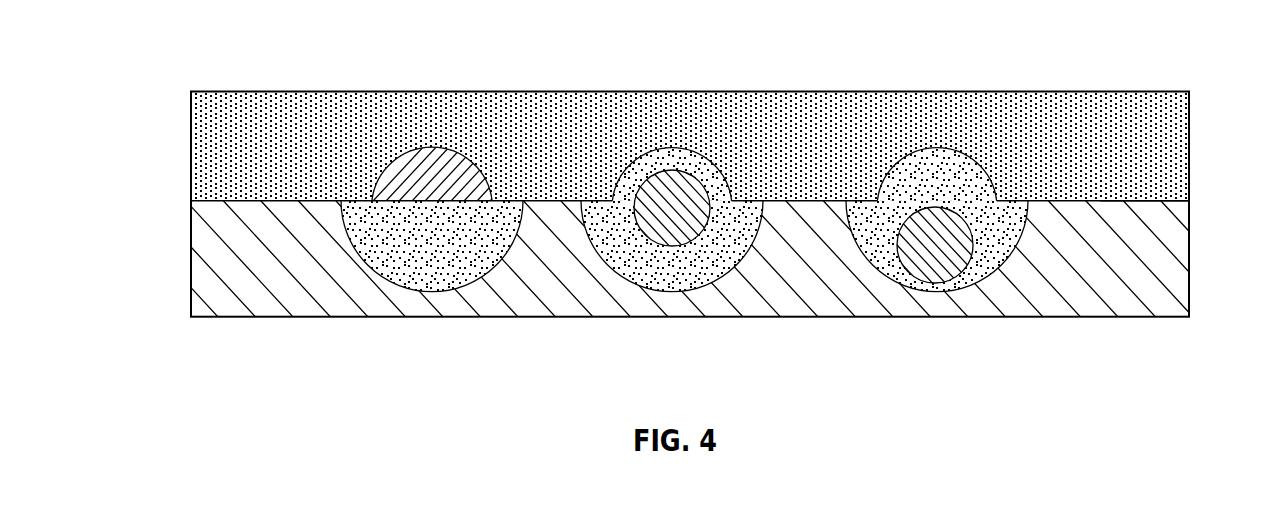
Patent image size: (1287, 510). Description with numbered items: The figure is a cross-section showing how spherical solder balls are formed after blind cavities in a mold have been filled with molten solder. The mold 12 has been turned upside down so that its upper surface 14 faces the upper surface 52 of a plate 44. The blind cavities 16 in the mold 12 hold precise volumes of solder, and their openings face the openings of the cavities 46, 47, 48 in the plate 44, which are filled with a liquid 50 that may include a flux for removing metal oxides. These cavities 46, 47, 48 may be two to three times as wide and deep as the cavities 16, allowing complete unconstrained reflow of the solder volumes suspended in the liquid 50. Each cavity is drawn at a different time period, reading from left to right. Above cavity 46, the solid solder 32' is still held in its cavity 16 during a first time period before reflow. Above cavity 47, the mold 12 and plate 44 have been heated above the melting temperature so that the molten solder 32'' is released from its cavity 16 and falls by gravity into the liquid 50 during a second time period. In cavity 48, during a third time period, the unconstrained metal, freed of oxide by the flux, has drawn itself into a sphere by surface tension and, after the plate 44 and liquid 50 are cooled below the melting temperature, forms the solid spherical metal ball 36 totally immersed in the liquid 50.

The mold 12 is at (191, 143).
The upper surface 14 is at (225, 201).
The plate 44 is at (191, 283).
The cavity 46 is at (377, 268).
The cavity 47 is at (612, 270).
The cavity 48 is at (868, 266).
The liquid 50 is at (433, 274).
The blind cavities 16 is at (484, 176).
The solid solder 32' is at (465, 123).
The molten solder 32'' is at (679, 141).
The solid spherical metal ball 36 is at (915, 282).
The upper surface 52 is at (1133, 201).